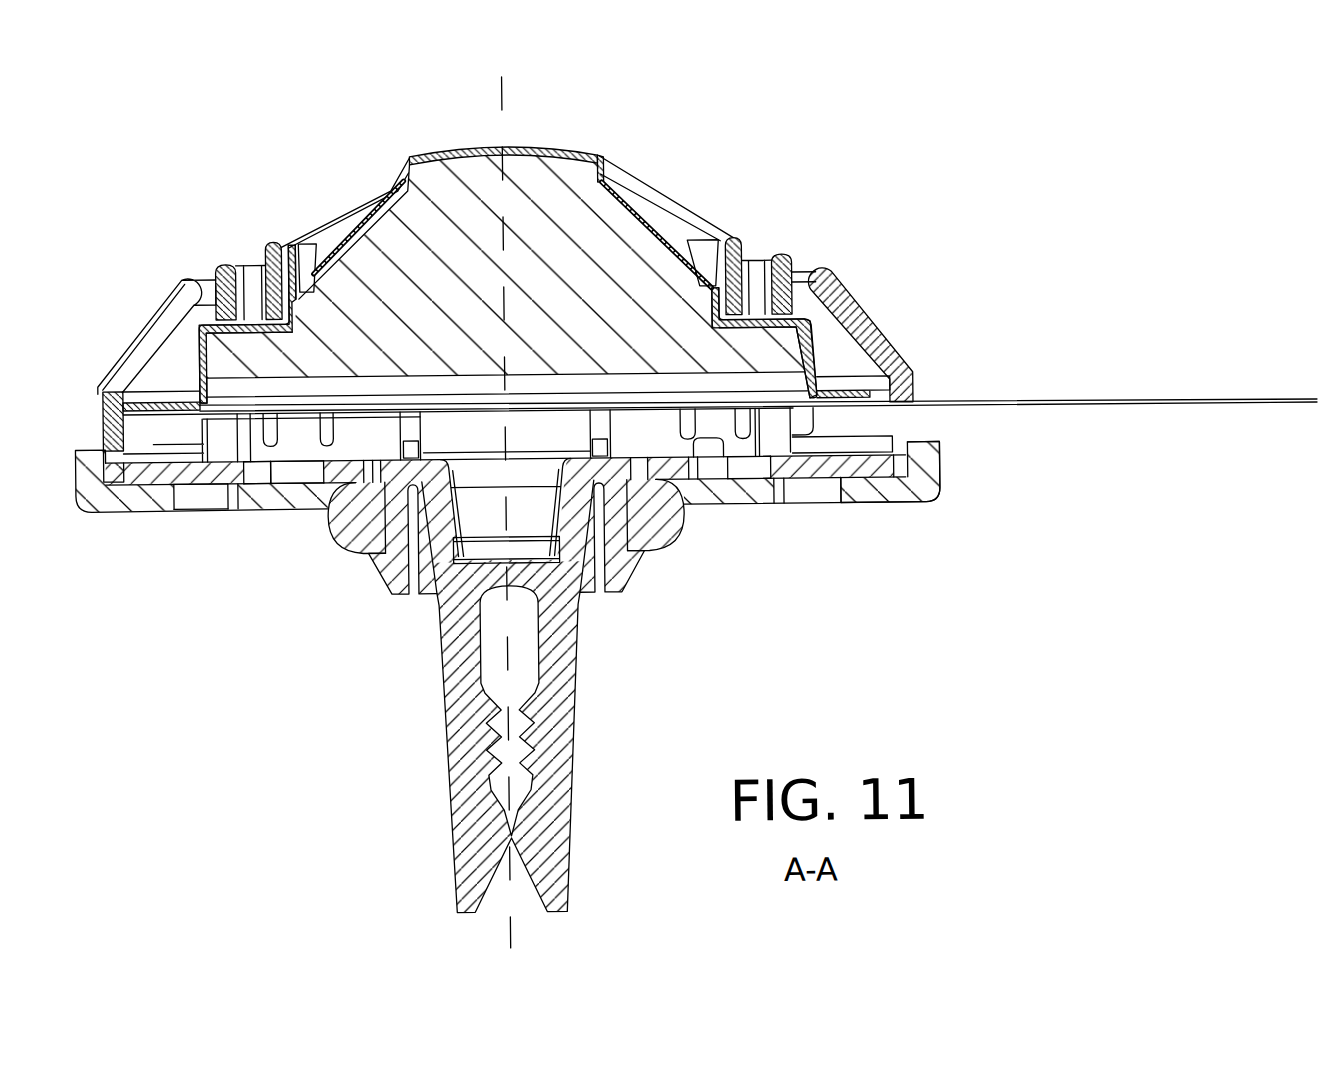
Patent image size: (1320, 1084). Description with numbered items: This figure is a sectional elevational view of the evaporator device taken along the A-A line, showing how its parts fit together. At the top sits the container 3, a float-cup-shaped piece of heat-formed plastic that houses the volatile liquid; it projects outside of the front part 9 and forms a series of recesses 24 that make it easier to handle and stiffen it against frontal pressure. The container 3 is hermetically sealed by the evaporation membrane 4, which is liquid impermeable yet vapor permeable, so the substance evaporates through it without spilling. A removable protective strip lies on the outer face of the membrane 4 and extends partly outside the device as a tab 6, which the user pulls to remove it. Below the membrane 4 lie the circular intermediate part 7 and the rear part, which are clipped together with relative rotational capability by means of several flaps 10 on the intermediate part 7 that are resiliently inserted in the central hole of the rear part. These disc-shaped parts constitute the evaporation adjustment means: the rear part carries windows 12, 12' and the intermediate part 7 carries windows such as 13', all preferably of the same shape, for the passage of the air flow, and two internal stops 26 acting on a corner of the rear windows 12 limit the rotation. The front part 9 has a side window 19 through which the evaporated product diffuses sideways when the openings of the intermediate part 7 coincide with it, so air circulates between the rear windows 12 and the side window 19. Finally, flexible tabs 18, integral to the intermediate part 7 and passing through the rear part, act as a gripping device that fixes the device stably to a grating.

The container 3 is at (538, 150).
The recesses 24 is at (650, 218).
The front part 9 is at (829, 270).
The evaporation membrane 4 is at (772, 407).
The tab 6 is at (1094, 405).
The side window 19 is at (886, 426).
The intermediate part 7 is at (927, 497).
The windows 12 is at (508, 550).
The windows 12' is at (497, 565).
The internal stops 26 is at (706, 450).
The flaps 10 is at (392, 594).
The windows 13' is at (285, 585).
The flexible tabs 18 is at (575, 848).